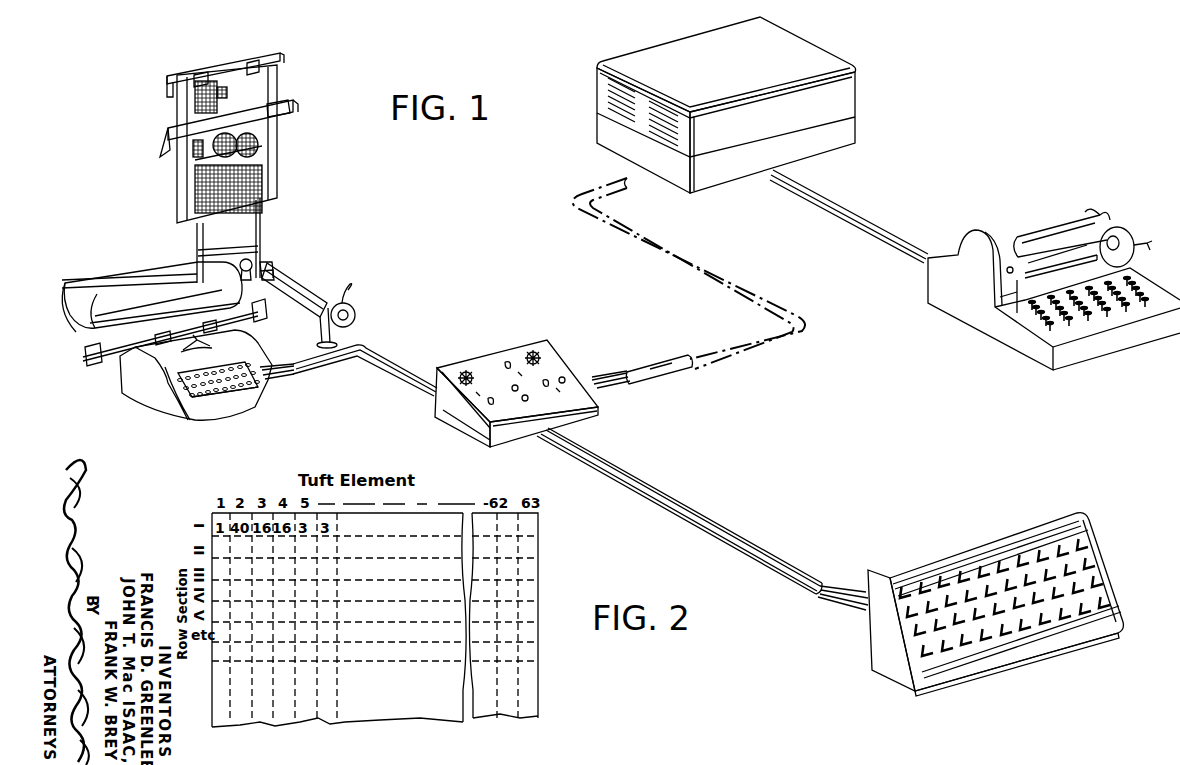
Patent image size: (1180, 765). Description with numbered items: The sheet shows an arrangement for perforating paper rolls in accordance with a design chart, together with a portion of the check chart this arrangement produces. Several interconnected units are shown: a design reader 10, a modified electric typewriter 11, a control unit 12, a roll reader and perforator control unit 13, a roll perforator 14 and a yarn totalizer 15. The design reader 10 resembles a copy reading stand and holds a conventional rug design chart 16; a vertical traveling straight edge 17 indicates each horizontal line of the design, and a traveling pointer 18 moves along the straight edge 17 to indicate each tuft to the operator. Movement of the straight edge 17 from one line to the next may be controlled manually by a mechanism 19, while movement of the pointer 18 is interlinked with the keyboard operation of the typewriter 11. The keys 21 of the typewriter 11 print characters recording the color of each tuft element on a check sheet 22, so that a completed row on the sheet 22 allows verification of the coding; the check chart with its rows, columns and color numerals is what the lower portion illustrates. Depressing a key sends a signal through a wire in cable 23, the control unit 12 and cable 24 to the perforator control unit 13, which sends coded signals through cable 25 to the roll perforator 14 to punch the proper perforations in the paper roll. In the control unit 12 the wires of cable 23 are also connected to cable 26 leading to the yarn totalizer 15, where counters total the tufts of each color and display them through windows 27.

The design reader 10 is at (320, 154).
The modified electric typewriter 11 is at (111, 406).
The control unit 12 is at (507, 355).
The roll reader and perforator control unit 13 is at (602, 100).
The roll perforator 14 is at (952, 305).
The yarn totalizer 15 is at (962, 552).
The rug design chart 16 is at (200, 165).
The vertical traveling straight edge 17 is at (258, 110).
The traveling pointer 18 is at (223, 113).
The mechanism 19 is at (303, 293).
The keys 21 is at (207, 419).
The check sheet 22 is at (187, 325).
The cable 23 is at (322, 370).
The cable 24 is at (660, 363).
The cable 25 is at (836, 218).
The cable 26 is at (683, 515).
The windows 27 is at (921, 583).